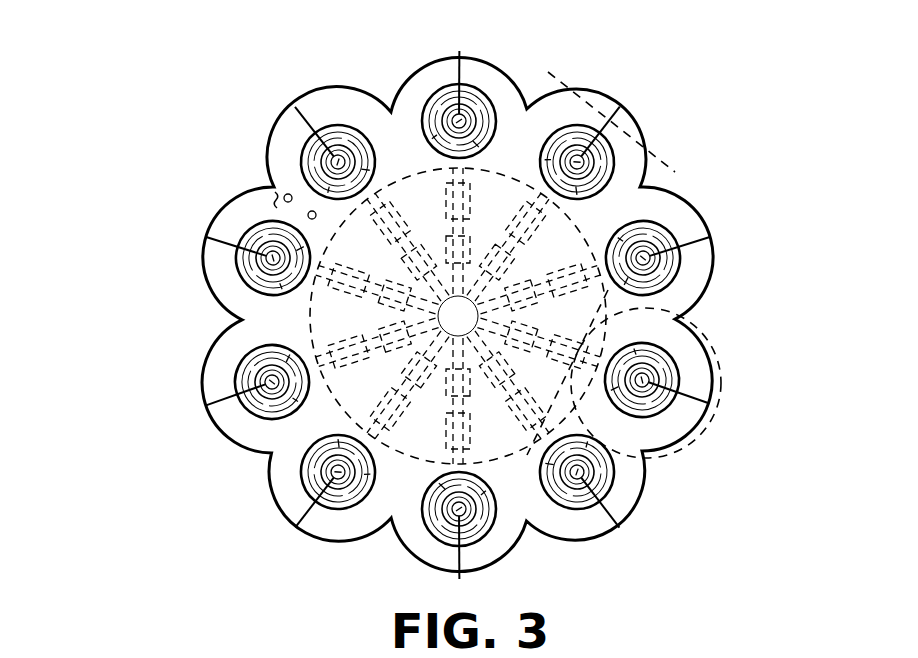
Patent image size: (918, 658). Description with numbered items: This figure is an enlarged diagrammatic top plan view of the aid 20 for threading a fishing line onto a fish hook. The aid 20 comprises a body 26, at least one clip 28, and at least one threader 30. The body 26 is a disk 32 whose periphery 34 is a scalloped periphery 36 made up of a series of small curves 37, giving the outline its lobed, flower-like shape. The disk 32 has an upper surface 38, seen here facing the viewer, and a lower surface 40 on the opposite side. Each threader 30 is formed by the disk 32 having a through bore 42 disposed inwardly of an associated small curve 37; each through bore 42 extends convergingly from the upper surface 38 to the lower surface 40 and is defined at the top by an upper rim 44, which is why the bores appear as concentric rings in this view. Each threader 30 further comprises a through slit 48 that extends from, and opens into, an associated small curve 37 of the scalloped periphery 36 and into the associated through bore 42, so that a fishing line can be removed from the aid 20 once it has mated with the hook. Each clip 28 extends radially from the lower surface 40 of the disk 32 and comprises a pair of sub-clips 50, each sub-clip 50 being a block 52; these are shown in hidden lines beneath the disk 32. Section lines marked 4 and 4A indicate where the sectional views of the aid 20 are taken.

The aid 20 is at (140, 192).
The body 26 is at (457, 292).
The disk 32 is at (335, 92).
The clip 28 is at (308, 311).
The threader 30 is at (293, 168).
The periphery 34 is at (675, 55).
The scalloped periphery 36 is at (675, 55).
The small curves 37 is at (616, 100).
The upper surface 38 is at (275, 200).
The lower surface 40 is at (499, 440).
The through bore 42 is at (282, 186).
The upper rim 44 is at (343, 138).
The through slit 48 is at (316, 114).
The sub-clips 50 is at (458, 316).
The block 52 is at (510, 412).
The section line 4- 4 is at (660, 333).
The section line 4A- 4A is at (567, 95).